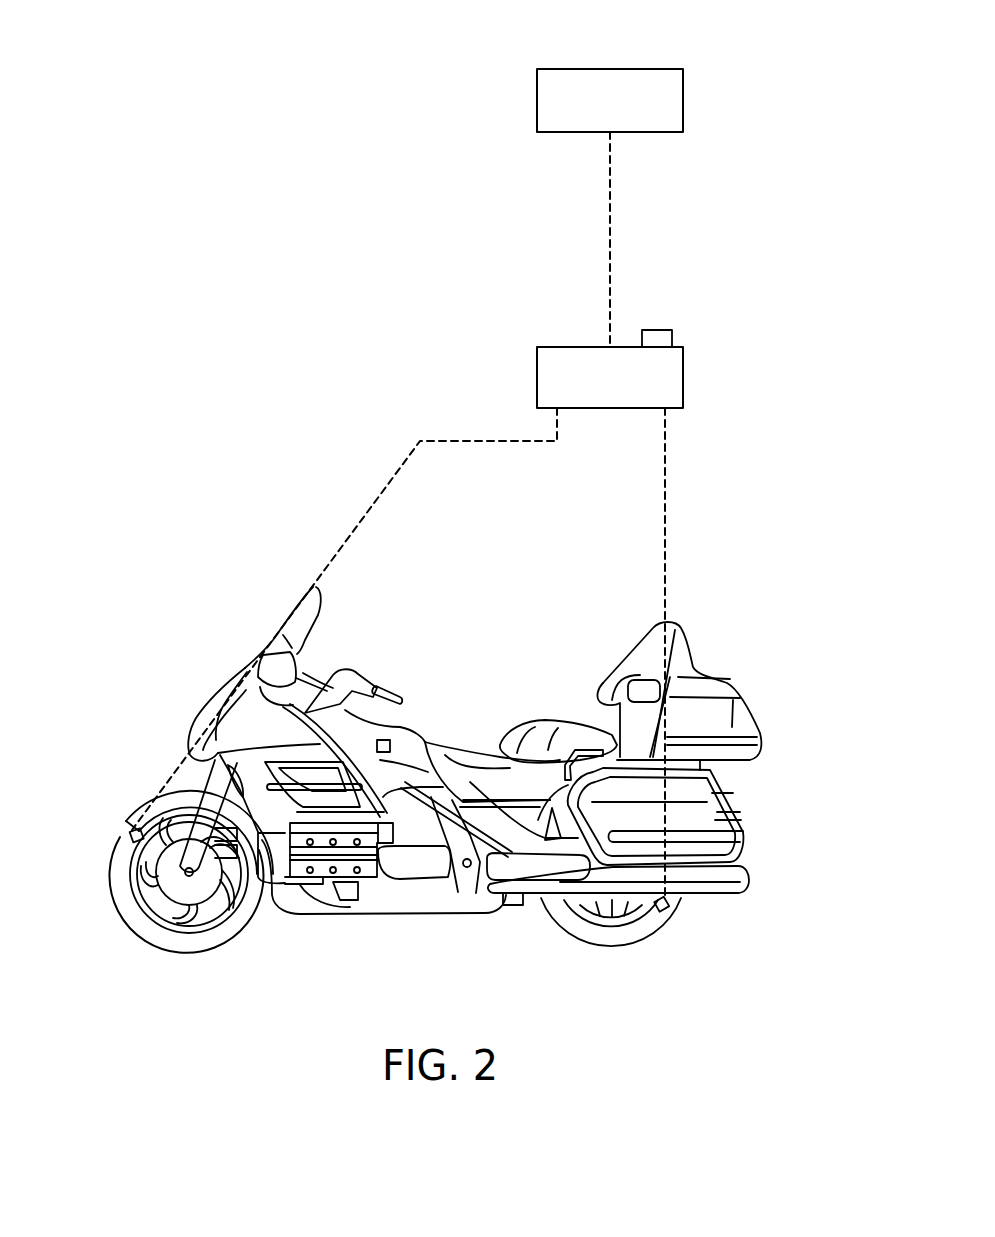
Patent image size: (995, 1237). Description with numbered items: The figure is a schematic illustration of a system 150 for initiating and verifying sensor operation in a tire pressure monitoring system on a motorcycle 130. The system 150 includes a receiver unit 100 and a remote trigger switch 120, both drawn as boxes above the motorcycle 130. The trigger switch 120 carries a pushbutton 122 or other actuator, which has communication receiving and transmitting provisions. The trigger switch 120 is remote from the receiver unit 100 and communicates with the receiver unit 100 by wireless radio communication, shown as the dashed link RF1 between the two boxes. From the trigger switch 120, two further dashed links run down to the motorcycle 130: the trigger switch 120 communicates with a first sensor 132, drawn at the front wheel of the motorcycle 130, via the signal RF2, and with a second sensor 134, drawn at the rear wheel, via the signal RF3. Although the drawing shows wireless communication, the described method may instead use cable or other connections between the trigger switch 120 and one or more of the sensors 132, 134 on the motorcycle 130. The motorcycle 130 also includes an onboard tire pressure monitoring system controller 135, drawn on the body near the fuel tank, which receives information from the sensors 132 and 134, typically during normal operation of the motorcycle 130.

The system 150 is at (195, 84).
The receiver unit 100 is at (676, 104).
The remote trigger switch 120 is at (676, 390).
The pushbutton 122 is at (657, 338).
The wireless radio communication RF1 is at (610, 258).
The signal RF2 is at (400, 491).
The signal RF3 is at (665, 512).
The motorcycle 130 is at (474, 755).
The first sensor 132 is at (133, 829).
The second sensor 134 is at (668, 912).
The onboard tire pressure monitoring system controller 135 is at (386, 742).